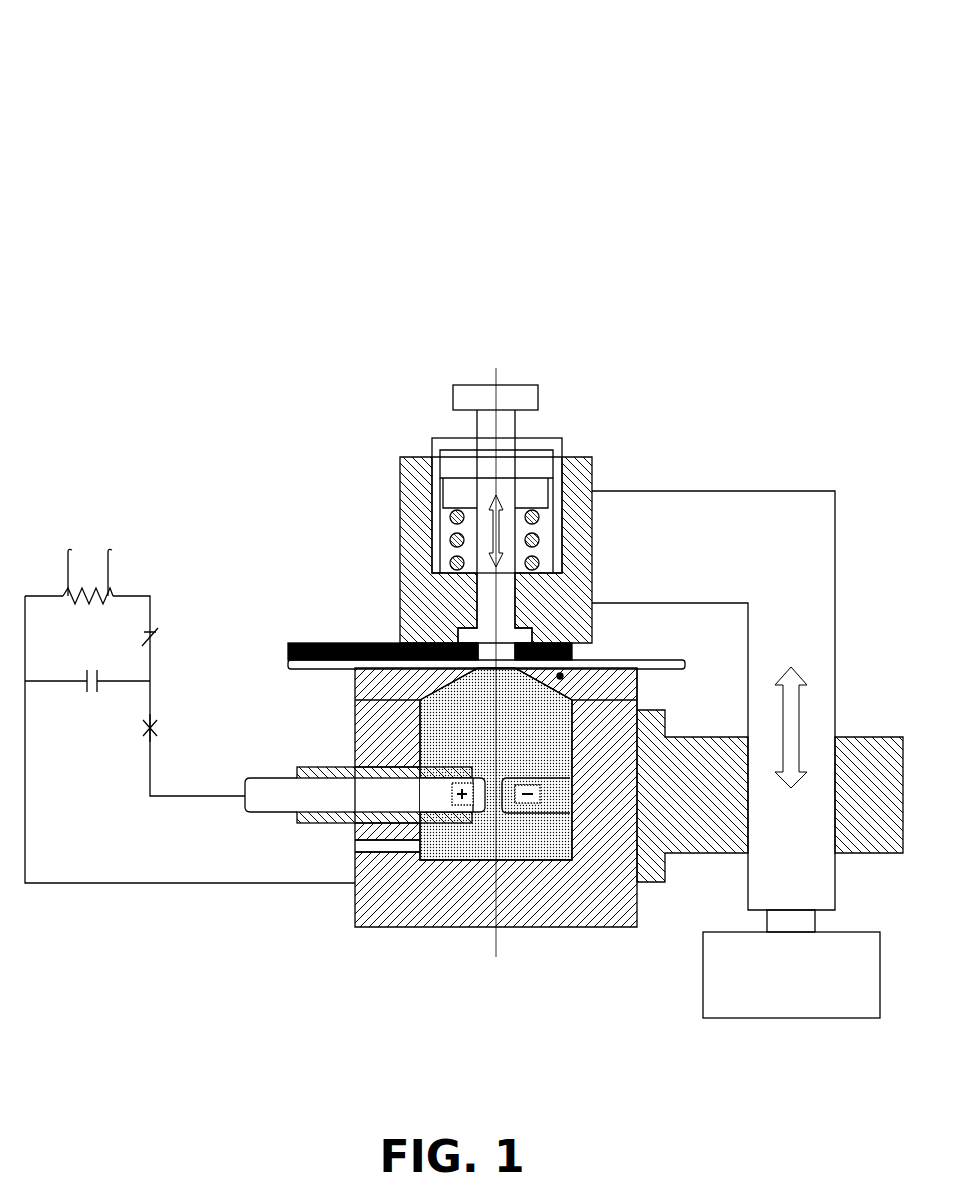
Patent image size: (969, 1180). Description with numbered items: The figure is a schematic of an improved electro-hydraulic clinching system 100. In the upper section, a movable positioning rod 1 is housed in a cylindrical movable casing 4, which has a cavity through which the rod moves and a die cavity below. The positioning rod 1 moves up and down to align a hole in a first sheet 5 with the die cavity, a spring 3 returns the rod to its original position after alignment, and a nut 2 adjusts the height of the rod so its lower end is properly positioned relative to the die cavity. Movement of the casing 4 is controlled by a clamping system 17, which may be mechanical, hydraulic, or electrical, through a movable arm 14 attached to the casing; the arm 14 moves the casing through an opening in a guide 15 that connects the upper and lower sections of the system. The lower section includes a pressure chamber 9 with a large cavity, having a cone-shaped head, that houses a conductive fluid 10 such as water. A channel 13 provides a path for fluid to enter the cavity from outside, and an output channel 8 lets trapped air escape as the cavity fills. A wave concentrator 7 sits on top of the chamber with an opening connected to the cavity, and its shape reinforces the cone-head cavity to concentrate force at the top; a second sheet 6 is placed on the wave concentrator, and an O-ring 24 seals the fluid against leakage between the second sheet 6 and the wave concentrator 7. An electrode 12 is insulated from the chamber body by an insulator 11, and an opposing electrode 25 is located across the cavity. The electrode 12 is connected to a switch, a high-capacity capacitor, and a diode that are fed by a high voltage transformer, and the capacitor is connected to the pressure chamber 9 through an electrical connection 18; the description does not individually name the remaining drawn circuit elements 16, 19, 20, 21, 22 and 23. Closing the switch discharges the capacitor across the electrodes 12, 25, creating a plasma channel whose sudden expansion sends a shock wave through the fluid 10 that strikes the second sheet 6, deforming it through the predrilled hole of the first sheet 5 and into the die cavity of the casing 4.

The electro-hydraulic clinching system 100 is at (150, 56).
The movable positioning rod 1 is at (540, 397).
The nut 2 is at (455, 440).
The spring 3 is at (452, 545).
The movable casing 4 is at (400, 490).
The first sheet 5 is at (378, 645).
The second sheet 6 is at (668, 660).
The wave concentrator 7 is at (640, 680).
The output channel 8 is at (355, 674).
The pressure chamber 9 is at (550, 928).
The fluid 10 is at (457, 847).
The insulator 11 is at (338, 770).
The electrode 12 is at (360, 784).
The channel 13 is at (355, 843).
The movable arm 14 is at (748, 900).
The guide 15 is at (712, 737).
The heater 16 is at (90, 592).
The clamping system 17 is at (703, 990).
The electrical connection 18 is at (25, 772).
The wire 19 is at (150, 772).
The capacitor 20 is at (92, 700).
The switch 21 is at (160, 632).
The lead 22 is at (62, 558).
The switch 23 is at (162, 735).
The O-ring 24 is at (575, 662).
The opposing electrode 25 is at (536, 795).